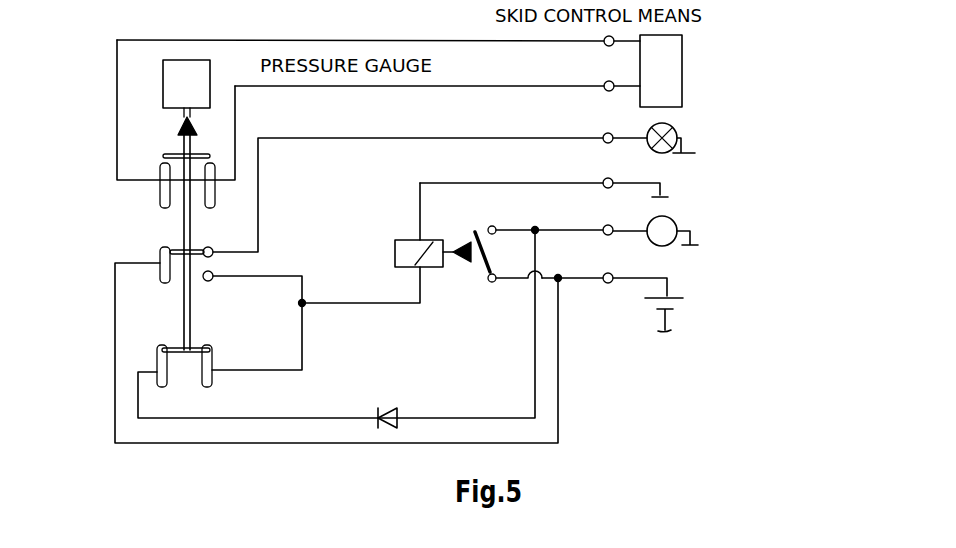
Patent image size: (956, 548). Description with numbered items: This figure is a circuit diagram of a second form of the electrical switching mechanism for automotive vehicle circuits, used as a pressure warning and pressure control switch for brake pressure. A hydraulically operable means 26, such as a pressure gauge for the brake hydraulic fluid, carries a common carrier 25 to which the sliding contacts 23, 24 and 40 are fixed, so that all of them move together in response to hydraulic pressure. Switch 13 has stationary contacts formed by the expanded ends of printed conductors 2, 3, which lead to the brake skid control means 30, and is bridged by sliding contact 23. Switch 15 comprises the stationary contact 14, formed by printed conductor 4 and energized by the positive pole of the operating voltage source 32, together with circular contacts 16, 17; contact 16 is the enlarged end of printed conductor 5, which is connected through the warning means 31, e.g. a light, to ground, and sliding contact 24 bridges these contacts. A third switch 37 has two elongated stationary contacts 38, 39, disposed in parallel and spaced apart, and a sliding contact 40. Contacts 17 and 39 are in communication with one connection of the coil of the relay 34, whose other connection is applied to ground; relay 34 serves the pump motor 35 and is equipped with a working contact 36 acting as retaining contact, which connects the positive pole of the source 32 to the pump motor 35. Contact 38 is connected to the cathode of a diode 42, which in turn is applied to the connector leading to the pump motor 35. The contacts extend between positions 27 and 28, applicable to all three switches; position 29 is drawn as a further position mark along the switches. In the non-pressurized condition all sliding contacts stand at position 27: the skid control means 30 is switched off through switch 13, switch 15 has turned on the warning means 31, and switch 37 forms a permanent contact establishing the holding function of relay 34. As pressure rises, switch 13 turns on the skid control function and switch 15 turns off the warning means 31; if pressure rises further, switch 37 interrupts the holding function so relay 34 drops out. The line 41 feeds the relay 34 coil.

The printed conductor 2 is at (423, 40).
The printed conductor 3 is at (423, 86).
The printed conductor 4 is at (197, 444).
The printed conductor 5 is at (425, 138).
The switch 13 is at (147, 187).
The stationary contact 14 is at (160, 277).
The switch 15 is at (196, 287).
The contact 16 is at (213, 248).
The contact 17 is at (214, 275).
The sliding contact 23 is at (166, 154).
The sliding contact 24 is at (176, 248).
The carrier 25 is at (183, 116).
The hydraulically operable means 26 is at (206, 72).
The position 27 is at (95, 155).
The position 28 is at (95, 180).
The sensor 29 is at (95, 203).
The brake skid control means 30 is at (682, 75).
The warning means 31 is at (672, 128).
The operating voltage source 32 is at (667, 295).
The relay 34 is at (431, 240).
The pump motor 35 is at (664, 216).
The working contact 36 is at (487, 251).
The third switch 37 is at (229, 352).
The stationary contact 38 is at (157, 365).
The stationary contact 39 is at (210, 383).
The sliding contact 40 is at (207, 348).
The relay supply line 41 is at (503, 183).
The diode 42 is at (372, 410).